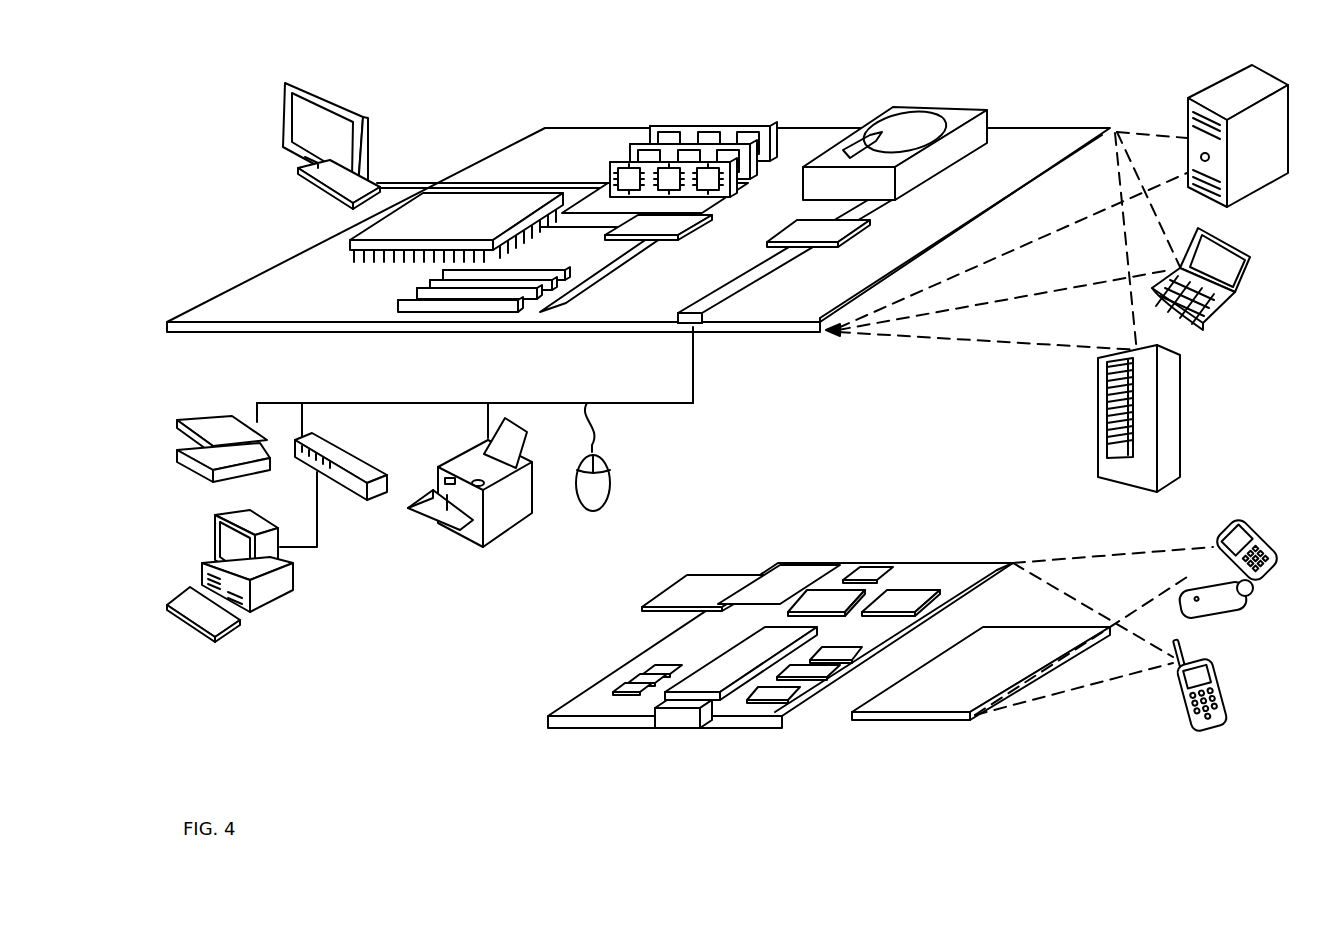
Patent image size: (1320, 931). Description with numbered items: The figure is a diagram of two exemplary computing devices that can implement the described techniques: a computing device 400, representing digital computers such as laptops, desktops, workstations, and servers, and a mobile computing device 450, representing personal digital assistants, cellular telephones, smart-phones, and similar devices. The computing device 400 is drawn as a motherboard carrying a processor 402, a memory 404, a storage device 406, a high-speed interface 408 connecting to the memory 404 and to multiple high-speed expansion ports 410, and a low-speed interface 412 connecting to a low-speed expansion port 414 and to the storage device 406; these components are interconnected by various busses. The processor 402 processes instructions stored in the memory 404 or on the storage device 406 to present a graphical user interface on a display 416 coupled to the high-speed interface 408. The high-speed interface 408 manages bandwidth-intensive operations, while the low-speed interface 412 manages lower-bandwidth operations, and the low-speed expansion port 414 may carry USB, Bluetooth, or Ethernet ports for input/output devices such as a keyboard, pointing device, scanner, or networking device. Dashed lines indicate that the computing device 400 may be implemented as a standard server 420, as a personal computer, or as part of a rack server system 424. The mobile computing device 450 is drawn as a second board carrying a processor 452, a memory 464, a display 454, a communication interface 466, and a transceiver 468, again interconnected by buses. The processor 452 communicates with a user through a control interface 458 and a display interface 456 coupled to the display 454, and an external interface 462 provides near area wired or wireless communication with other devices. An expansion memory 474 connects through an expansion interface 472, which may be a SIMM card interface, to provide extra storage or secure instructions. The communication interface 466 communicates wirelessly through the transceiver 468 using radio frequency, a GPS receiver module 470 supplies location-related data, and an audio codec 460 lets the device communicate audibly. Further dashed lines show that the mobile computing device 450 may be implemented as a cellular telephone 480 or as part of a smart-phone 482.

The computing device 400 is at (471, 98).
The processor 402 is at (350, 242).
The memory 404 is at (660, 126).
The storage device 406 is at (890, 107).
The high-speed interface 408 is at (633, 224).
The high-speed expansion ports 410 is at (412, 300).
The low-speed interface 412 is at (802, 227).
The low-speed expansion port 414 is at (704, 323).
The display 416 is at (288, 78).
The standard server 420 is at (1187, 115).
The rack server system 424 is at (1098, 444).
The mobile computing device 450 is at (522, 730).
The processor 452 is at (715, 688).
The display 454 is at (938, 703).
The display interface 456 is at (778, 692).
The control interface 458 is at (833, 668).
The audio codec 460 is at (837, 652).
The external interface 462 is at (683, 712).
The memory 464 is at (640, 680).
The communication interface 466 is at (828, 597).
The transceiver 468 is at (902, 597).
The GPS receiver module 470 is at (878, 567).
The expansion interface 472 is at (741, 640).
The expansion memory 474 is at (688, 578).
The cellular telephone 480 is at (1235, 524).
The smart-phone 482 is at (1173, 690).